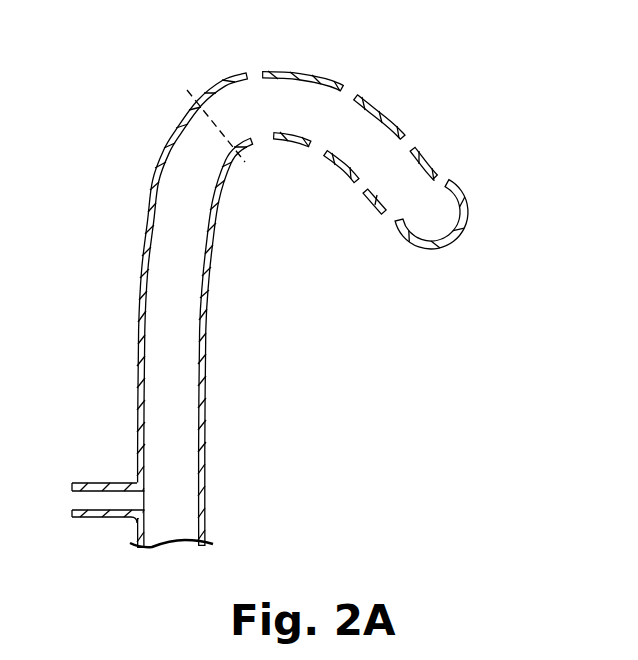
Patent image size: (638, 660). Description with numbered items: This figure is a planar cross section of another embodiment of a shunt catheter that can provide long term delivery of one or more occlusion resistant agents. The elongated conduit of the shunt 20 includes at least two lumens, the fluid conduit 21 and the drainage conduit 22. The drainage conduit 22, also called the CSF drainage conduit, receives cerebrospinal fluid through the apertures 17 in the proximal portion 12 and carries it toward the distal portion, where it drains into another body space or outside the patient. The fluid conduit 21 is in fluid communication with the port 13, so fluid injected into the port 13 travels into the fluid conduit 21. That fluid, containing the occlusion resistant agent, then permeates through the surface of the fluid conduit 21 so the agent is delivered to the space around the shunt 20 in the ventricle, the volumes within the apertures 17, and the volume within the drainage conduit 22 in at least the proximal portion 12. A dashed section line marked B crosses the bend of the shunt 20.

The proximal portion 12 is at (427, 153).
The port 13 is at (103, 485).
The apertures 17 is at (408, 138).
The shunt 20 is at (248, 311).
The fluid conduit 21 is at (138, 340).
The drainage conduit 22 is at (180, 371).
The section line B is at (225, 136).